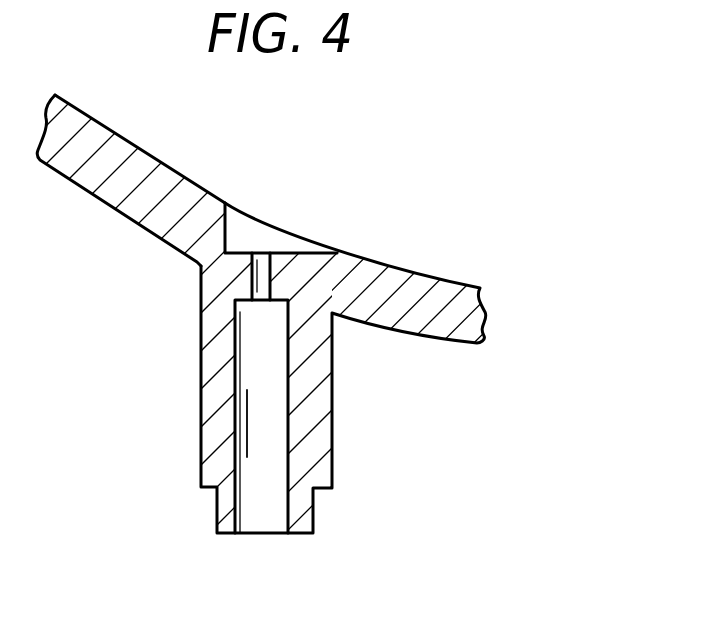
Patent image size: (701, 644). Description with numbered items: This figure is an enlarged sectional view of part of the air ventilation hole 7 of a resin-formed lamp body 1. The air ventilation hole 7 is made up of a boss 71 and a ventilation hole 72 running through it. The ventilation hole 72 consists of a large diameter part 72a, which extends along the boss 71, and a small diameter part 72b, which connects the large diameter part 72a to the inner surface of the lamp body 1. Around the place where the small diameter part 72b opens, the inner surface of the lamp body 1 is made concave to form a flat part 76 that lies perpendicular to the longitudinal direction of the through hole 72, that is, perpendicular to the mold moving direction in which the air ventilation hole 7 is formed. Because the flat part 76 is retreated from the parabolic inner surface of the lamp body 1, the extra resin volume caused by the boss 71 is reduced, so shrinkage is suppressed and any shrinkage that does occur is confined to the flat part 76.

The lamp body 1 is at (120, 198).
The air ventilation hole 7 is at (350, 333).
The boss 71 is at (322, 423).
The ventilation hole 72 is at (170, 430).
The large diameter part 72a is at (258, 332).
The small diameter part 72b is at (263, 277).
The flat part 76 is at (290, 253).